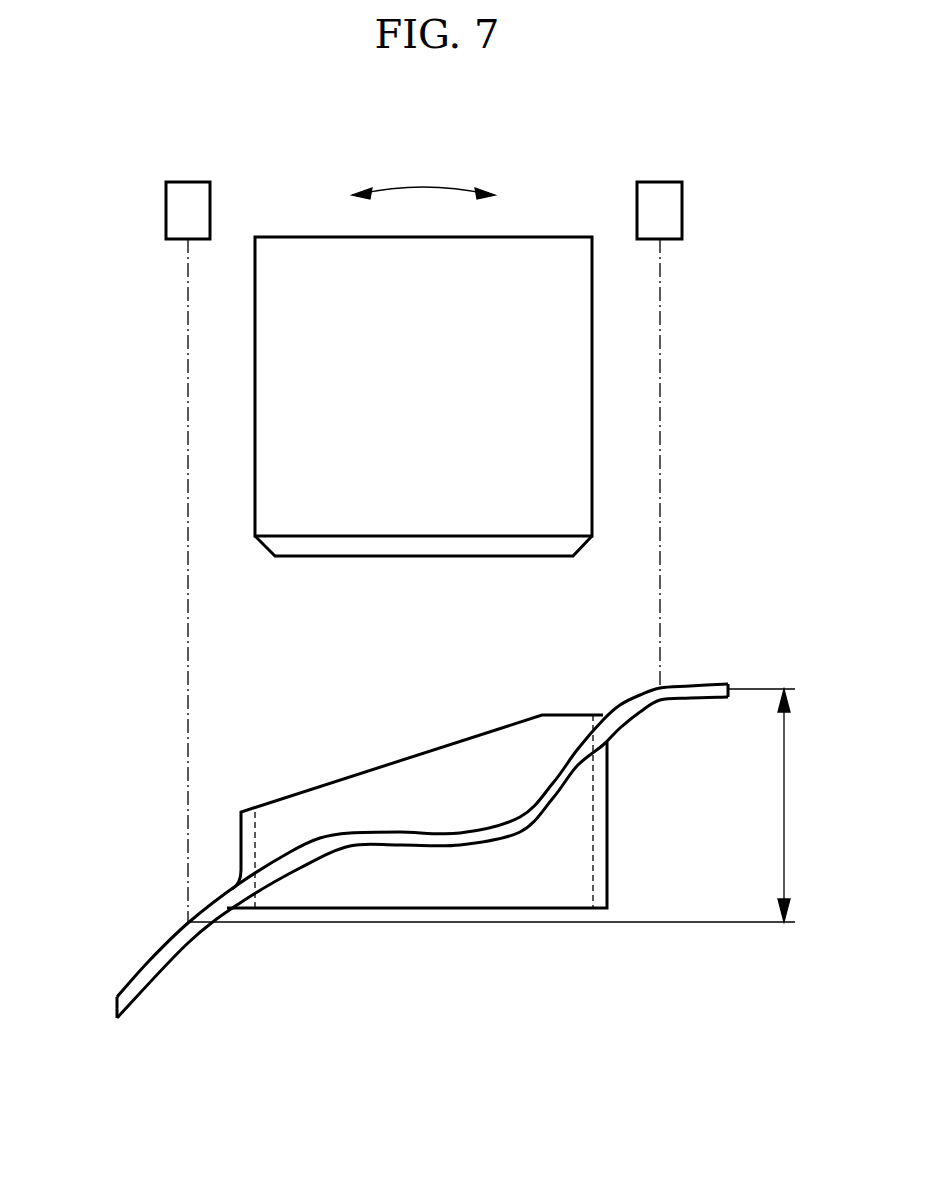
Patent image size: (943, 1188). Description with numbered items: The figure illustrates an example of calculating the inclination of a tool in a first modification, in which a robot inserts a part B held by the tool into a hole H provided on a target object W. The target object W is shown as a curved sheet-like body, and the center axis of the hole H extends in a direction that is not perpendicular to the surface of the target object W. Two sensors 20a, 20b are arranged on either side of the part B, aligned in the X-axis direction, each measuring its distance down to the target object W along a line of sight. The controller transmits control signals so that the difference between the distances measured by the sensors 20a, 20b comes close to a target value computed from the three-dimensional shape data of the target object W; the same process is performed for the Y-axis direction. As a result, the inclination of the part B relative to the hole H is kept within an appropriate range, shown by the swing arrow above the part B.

The sensor 20a is at (166, 205).
The sensor 20b is at (682, 204).
The part B is at (299, 236).
The target object W is at (148, 962).
The hole H is at (257, 831).